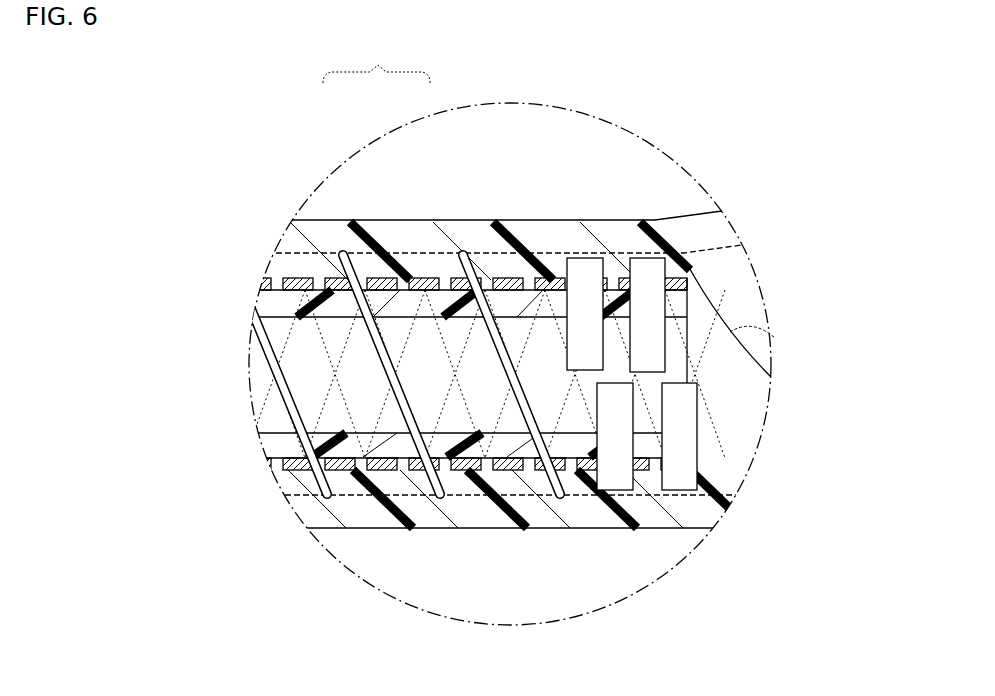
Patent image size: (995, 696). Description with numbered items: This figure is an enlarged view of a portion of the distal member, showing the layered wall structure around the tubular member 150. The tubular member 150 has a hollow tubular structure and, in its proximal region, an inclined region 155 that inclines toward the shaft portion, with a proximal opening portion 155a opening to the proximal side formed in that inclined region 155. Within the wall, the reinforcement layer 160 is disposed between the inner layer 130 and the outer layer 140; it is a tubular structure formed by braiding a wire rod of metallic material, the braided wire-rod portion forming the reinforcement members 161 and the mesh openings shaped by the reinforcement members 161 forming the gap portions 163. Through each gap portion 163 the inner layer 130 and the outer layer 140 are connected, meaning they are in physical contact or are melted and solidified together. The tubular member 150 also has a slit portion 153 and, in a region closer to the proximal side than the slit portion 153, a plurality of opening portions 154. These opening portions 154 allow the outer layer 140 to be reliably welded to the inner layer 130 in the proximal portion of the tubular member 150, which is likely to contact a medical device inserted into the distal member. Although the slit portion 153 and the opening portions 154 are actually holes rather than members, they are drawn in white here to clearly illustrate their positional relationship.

The inner layer 130 is at (268, 286).
The outer layer 140 is at (322, 238).
The tubular member 150 is at (492, 250).
The slit portion 153 is at (312, 484).
The opening portion 154 is at (587, 262).
The inclined region 155 is at (727, 397).
The proximal opening portion 155a is at (775, 338).
The reinforcement layer 160 is at (376, 57).
The reinforcement member 161 is at (407, 340).
The gap portion 163 is at (445, 345).